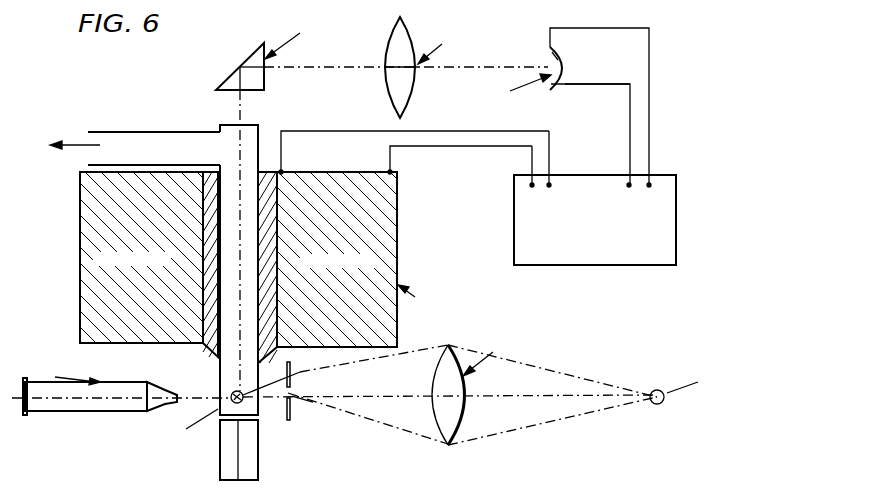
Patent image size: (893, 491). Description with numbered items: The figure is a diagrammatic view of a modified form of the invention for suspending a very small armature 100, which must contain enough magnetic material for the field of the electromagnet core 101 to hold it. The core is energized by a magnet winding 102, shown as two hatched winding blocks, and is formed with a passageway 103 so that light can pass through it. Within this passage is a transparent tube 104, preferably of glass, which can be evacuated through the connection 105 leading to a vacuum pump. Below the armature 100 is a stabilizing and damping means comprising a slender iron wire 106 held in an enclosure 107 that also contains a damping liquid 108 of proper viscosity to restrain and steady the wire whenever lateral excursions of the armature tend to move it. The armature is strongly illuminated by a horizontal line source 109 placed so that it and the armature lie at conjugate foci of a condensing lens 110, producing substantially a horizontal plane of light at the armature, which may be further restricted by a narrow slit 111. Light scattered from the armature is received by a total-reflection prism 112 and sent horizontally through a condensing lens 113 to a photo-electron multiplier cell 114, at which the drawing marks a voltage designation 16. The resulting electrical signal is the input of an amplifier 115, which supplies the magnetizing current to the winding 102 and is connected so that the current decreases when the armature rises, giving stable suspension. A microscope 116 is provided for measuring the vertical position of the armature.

The armature 100 is at (245, 403).
The electromagnet core 101 is at (267, 210).
The magnet winding 102 is at (98, 199).
The passageway 103 is at (275, 348).
The tube 104 is at (230, 353).
The connection 105 is at (116, 137).
The slender wire 106 is at (238, 445).
The enclosure 107 is at (257, 473).
The damping liquid 108 is at (228, 460).
The horizontal line source 109 is at (663, 402).
The condensing lens 110 is at (447, 409).
The narrow slit 111 is at (291, 387).
The total-reflection prism 112 is at (247, 78).
The condensing lens 113 is at (397, 82).
The photo-electron multiplier cell 114 is at (560, 58).
The amplifier 115 is at (614, 198).
The microscope 116 is at (80, 404).
The voltage V16 16 is at (597, 71).